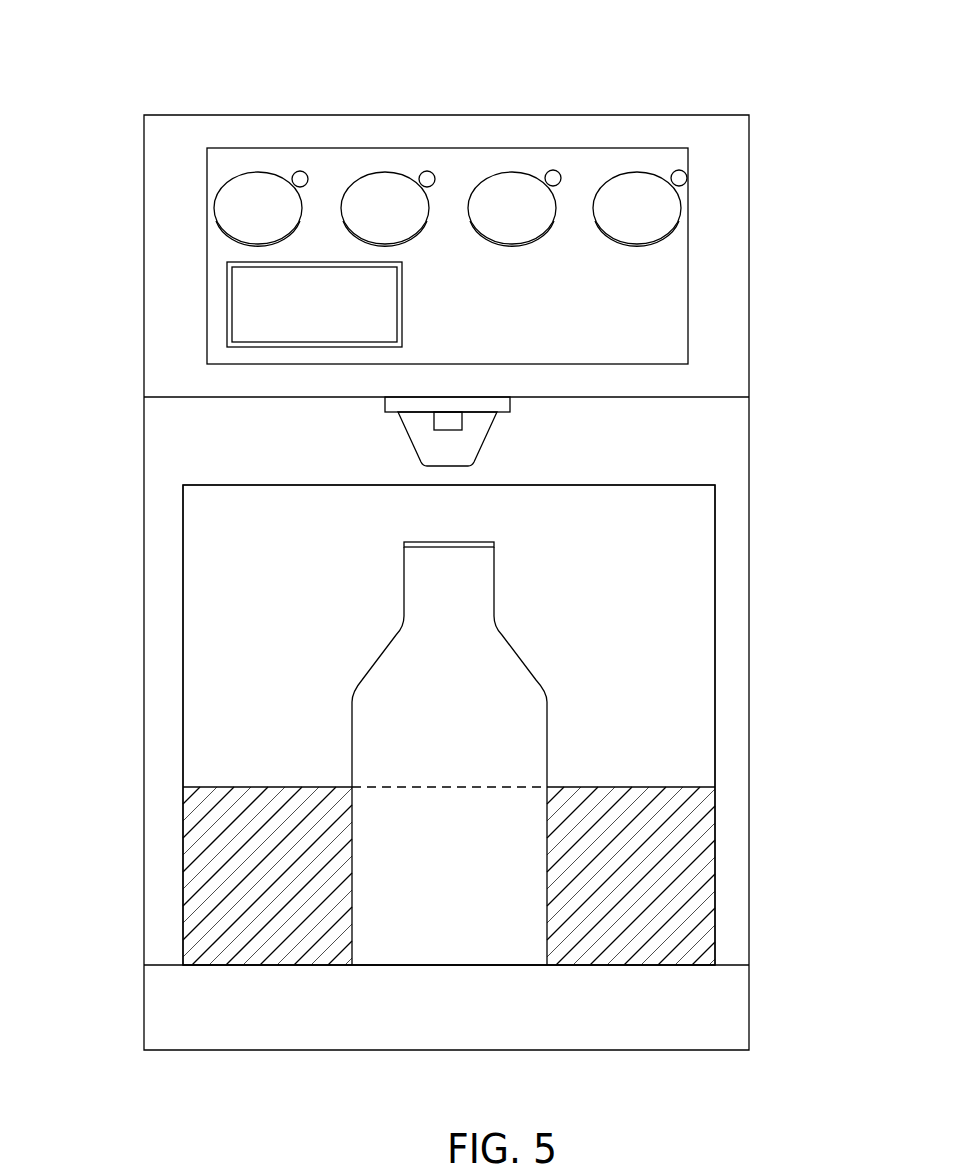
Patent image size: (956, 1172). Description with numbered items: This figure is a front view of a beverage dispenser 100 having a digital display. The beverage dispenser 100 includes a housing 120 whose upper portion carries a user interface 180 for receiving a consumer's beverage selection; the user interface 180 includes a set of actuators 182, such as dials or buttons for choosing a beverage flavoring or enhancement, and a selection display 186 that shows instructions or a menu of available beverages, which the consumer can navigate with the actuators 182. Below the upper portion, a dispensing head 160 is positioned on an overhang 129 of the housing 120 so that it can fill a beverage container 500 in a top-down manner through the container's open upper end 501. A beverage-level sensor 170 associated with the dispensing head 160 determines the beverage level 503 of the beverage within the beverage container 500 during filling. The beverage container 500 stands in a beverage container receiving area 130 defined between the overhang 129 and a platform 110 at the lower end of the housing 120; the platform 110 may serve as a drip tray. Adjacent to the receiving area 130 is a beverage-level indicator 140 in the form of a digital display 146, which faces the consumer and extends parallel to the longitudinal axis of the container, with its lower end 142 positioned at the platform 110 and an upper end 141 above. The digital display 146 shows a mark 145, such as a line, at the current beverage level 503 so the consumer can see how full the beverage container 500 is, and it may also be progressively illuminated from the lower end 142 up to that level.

The beverage dispenser 100 is at (205, 90).
The platform 110 is at (725, 1018).
The housing 120 is at (144, 192).
The overhang 129 is at (645, 397).
The beverage container receiving area 130 is at (140, 399).
The beverage-level indicator 140 is at (725, 693).
The upper end 141 is at (715, 520).
The lower end 142 is at (715, 915).
The mark 145 is at (687, 787).
The digital display 146 is at (667, 625).
The dispensing head 160 is at (411, 445).
The beverage-level sensor 170 is at (463, 422).
The user interface 180 is at (577, 190).
The actuators 182 is at (495, 195).
The selection display 186 is at (227, 303).
The beverage container 500 is at (533, 675).
The open upper end 501 is at (494, 545).
The beverage level 503 is at (517, 787).